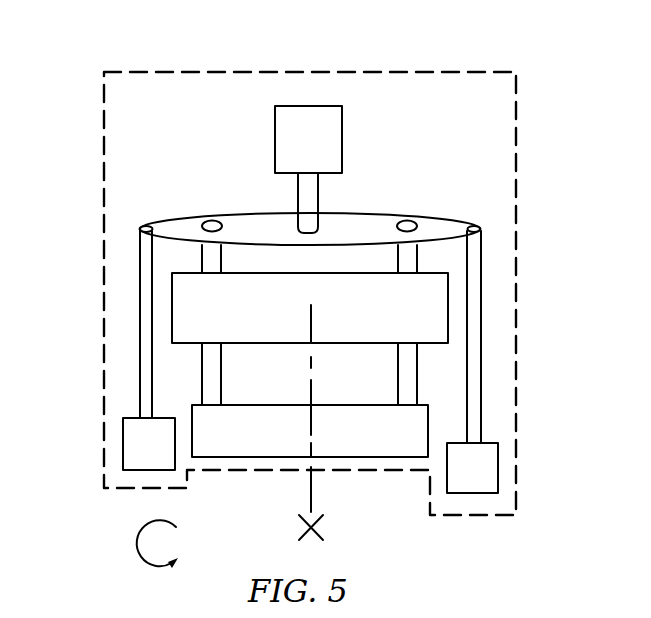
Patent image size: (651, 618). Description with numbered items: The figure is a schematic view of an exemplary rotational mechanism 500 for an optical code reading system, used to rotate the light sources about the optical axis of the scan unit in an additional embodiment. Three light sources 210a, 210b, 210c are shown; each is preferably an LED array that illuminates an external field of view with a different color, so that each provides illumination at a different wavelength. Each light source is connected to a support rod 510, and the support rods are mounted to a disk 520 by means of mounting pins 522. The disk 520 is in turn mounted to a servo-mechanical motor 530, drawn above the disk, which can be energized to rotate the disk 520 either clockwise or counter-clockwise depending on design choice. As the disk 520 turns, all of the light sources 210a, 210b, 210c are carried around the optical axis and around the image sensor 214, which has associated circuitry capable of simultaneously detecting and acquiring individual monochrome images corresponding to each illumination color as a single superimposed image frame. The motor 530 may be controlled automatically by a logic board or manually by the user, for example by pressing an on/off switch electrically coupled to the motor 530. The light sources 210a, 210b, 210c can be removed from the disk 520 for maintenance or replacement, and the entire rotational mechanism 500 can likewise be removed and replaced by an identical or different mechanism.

The rotational mechanism 500 is at (380, 113).
The servo-mechanical motor 530 is at (300, 146).
The disk 520 is at (375, 225).
The mounting pins 522 is at (480, 230).
The support rod 510 is at (480, 325).
The image sensor 214 is at (172, 320).
The light source 210b is at (223, 457).
The light source 210c is at (123, 450).
The light source 210a is at (498, 468).